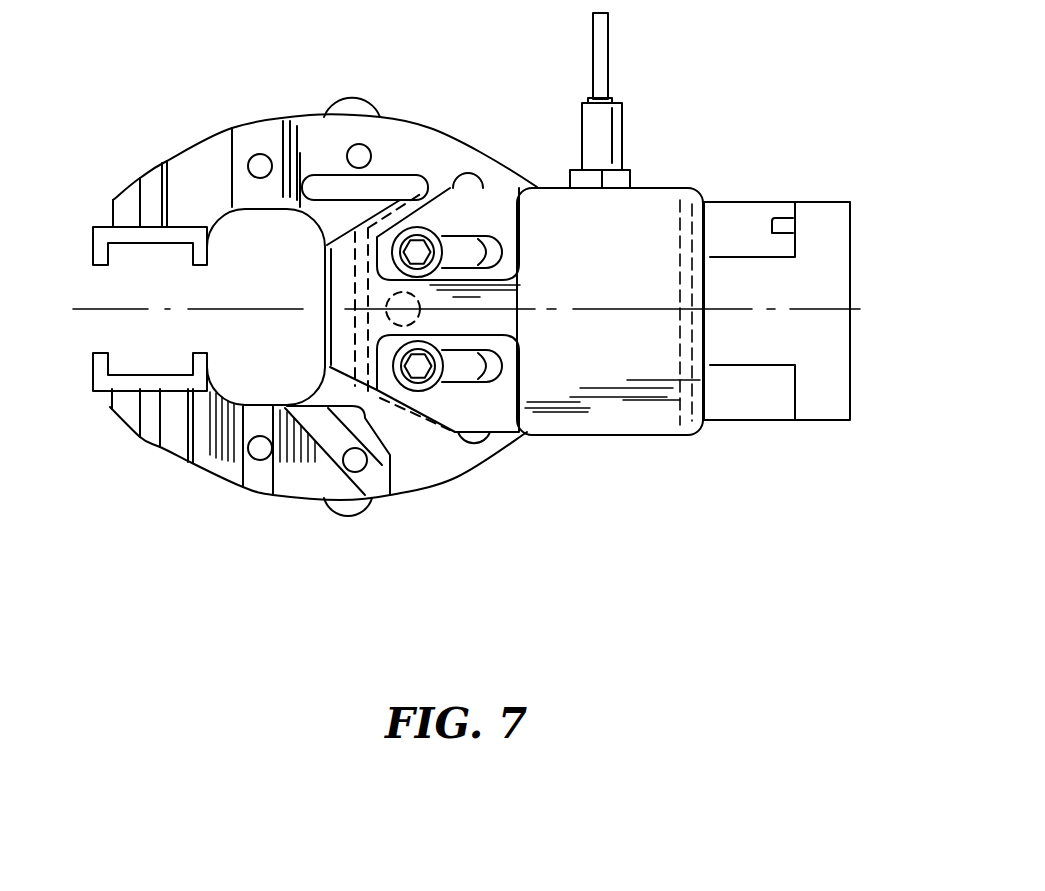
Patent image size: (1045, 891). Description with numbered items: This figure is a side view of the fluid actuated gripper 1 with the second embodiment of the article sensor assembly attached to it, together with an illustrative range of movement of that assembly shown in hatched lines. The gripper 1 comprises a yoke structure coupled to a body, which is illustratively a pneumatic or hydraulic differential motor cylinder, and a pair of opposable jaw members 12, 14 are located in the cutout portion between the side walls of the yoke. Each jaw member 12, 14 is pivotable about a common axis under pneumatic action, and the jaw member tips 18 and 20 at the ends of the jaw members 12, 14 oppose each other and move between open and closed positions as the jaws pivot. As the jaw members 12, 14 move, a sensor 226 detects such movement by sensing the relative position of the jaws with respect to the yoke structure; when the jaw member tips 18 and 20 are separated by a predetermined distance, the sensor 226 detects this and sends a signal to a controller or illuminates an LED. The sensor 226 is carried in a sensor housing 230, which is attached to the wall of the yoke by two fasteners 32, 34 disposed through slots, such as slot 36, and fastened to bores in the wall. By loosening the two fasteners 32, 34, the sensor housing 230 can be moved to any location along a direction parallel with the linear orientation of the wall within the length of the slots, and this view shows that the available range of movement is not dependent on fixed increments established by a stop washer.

The fluid actuated gripper 1 is at (495, 142).
The jaw member 12 is at (203, 158).
The jaw member 14 is at (233, 470).
The jaw member tip 18 is at (140, 243).
The jaw member tip 20 is at (140, 367).
The fastener 32 is at (423, 232).
The fastener 34 is at (437, 388).
The slot 36 is at (482, 252).
The sensor 226 is at (615, 142).
The sensor housing 230 is at (713, 300).